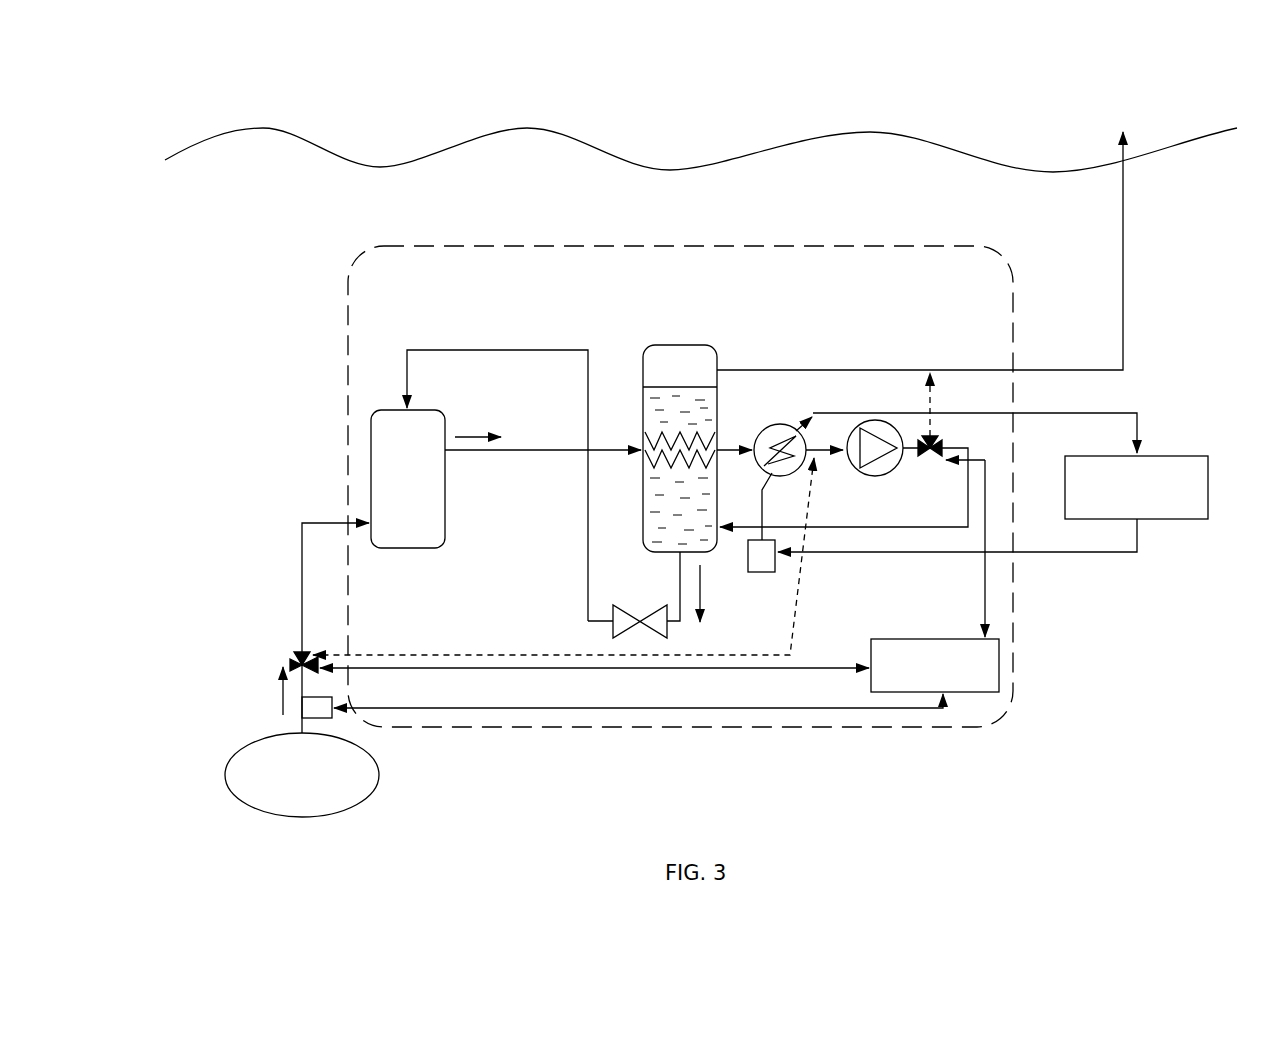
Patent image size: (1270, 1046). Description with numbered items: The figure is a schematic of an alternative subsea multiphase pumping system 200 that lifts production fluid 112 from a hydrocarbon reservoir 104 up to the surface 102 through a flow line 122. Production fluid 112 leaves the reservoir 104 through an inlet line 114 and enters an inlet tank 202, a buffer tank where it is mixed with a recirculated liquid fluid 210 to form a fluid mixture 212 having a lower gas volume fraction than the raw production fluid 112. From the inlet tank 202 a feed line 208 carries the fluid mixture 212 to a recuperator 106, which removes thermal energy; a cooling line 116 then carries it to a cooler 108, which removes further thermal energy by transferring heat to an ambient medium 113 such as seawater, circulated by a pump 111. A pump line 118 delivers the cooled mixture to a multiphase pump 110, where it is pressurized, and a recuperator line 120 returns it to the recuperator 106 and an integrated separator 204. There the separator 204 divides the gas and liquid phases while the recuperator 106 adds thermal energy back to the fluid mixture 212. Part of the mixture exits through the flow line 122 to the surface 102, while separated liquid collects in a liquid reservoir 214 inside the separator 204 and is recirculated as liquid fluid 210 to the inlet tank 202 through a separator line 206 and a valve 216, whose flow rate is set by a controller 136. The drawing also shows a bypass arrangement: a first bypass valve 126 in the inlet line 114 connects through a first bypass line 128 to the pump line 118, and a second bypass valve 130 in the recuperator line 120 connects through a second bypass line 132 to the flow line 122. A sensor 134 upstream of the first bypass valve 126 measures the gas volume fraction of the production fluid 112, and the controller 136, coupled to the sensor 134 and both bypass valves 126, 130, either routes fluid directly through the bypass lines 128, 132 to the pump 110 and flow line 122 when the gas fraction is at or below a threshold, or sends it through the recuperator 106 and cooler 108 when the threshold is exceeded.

The sea surface 102 is at (263, 128).
The hydrocarbon reservoir 104 is at (225, 775).
The recuperator 106 is at (686, 345).
The cooler 108 is at (790, 473).
The multiphase pump 110 is at (890, 473).
The pump 111 is at (778, 568).
The production fluid 112 is at (280, 700).
The ambient medium 113 is at (1167, 456).
The inlet line 114 is at (300, 552).
The cooling line 116 is at (733, 445).
The pump line 118 is at (828, 446).
The recuperator line 120 is at (940, 530).
The flow line 122 is at (1123, 215).
The first bypass valve 126 is at (297, 655).
The first bypass line 128 is at (796, 640).
The second bypass valve 130 is at (946, 438).
The second bypass line 132 is at (935, 402).
The sensor 134 is at (322, 718).
The controller 136 is at (999, 668).
The subsea multiphase pumping system 200 is at (972, 750).
The inlet tank 202 is at (410, 550).
The separator 204 is at (680, 450).
The separator line 206 is at (517, 350).
The feed line 208 is at (545, 445).
The liquid fluid 210 is at (702, 592).
The fluid mixture 212 is at (472, 435).
The liquid reservoir 214 is at (683, 517).
The valve 216 is at (612, 630).